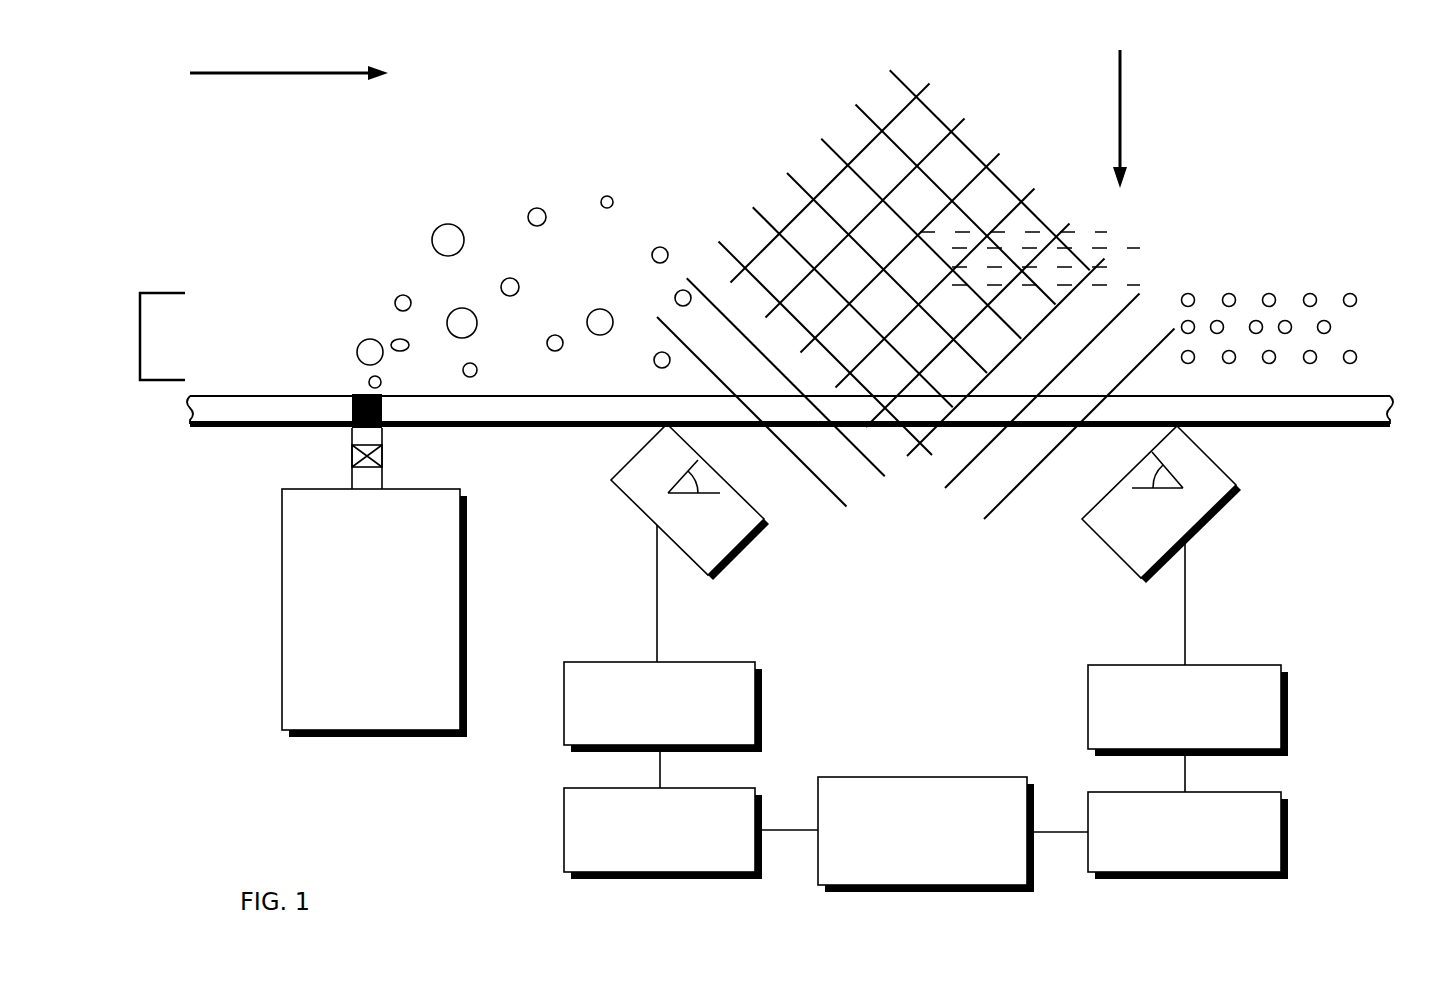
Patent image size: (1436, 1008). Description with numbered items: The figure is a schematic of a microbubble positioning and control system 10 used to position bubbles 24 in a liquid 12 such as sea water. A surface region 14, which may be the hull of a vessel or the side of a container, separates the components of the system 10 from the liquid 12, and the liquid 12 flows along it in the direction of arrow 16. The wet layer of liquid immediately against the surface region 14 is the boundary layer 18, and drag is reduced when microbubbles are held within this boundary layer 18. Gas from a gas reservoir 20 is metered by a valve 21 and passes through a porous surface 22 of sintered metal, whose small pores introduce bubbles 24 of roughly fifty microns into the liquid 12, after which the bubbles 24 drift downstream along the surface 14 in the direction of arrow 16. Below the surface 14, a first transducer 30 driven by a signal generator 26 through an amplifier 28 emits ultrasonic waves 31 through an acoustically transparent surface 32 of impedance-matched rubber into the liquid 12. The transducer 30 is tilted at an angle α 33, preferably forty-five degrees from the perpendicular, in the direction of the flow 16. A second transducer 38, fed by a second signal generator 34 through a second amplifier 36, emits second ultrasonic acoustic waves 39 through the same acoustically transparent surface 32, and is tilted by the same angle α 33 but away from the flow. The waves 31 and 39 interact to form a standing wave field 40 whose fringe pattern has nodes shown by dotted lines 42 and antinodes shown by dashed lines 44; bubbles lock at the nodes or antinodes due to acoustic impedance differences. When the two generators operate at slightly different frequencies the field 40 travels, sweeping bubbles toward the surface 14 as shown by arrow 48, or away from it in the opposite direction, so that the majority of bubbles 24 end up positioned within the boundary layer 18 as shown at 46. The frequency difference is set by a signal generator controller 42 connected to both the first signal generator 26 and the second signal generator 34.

The microbubble positioning and control system 10 is at (909, 655).
The liquid 12 is at (693, 79).
The surface region 14 is at (252, 394).
The arrow 16 is at (293, 73).
The boundary layer 18 is at (163, 293).
The gas reservoir 20 is at (282, 660).
The valve 21 is at (351, 456).
The porous surface 22 is at (384, 424).
The bubbles 24 is at (566, 274).
The signal generator 26 is at (564, 825).
The amplifier 28 is at (564, 702).
The transducer 30 is at (636, 504).
The ultrasonic waves energy 31 is at (810, 478).
The acoustically transparent surface 32 is at (882, 440).
The angle α 33 is at (703, 478).
The second signal generator 34 is at (1282, 833).
The second amplifier 36 is at (1282, 710).
The second transducer 38 is at (1207, 455).
The second ultrasonic acoustic waves 39 is at (1036, 462).
The standing wave field 40 is at (991, 122).
The signal generator controller 42 is at (1108, 266).
The antinodes 44 is at (1133, 280).
The positioned bubbles 46 is at (1374, 334).
The arrow 48 is at (1122, 118).